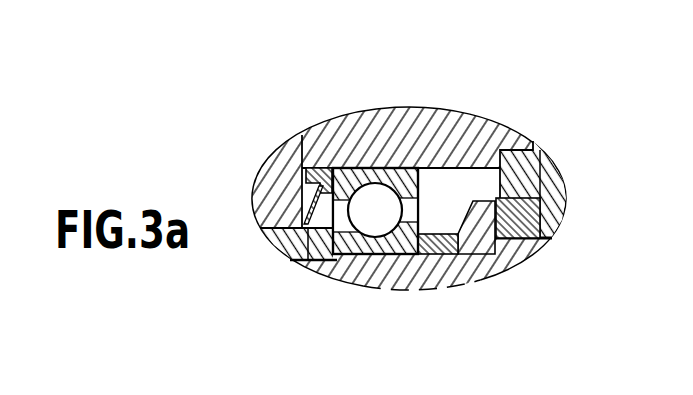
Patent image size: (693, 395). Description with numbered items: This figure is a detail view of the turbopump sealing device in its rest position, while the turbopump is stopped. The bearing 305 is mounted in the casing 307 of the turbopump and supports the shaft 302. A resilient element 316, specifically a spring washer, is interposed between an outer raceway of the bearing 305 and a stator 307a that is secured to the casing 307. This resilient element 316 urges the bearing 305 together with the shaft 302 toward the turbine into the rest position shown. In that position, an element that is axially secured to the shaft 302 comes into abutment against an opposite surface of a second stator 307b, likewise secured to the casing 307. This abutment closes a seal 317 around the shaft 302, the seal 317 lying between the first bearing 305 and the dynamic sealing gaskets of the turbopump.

The shaft 302 is at (483, 284).
The bearing 305 is at (368, 160).
The casing 307 is at (431, 110).
The stator 307a is at (273, 168).
The stator 307b is at (528, 252).
The resilient element 316 is at (312, 233).
The seal 317 is at (503, 220).